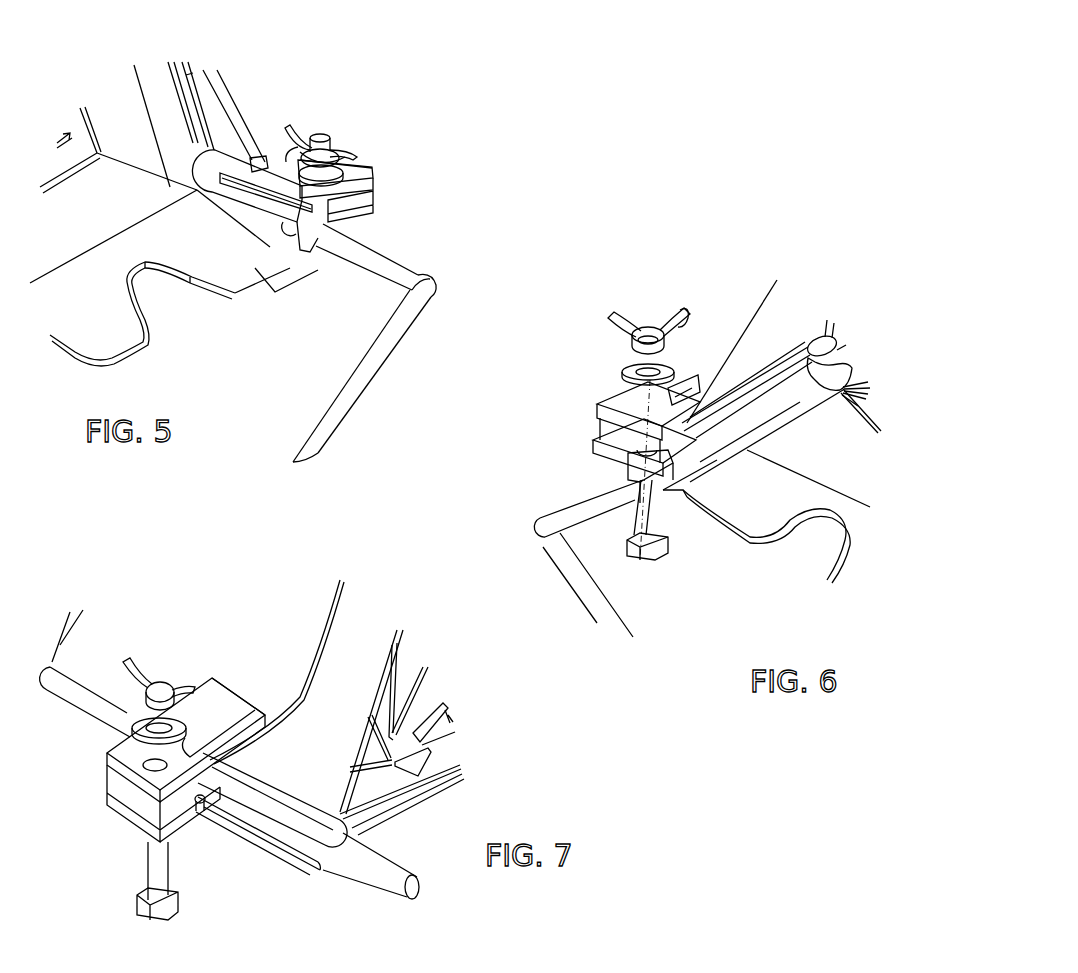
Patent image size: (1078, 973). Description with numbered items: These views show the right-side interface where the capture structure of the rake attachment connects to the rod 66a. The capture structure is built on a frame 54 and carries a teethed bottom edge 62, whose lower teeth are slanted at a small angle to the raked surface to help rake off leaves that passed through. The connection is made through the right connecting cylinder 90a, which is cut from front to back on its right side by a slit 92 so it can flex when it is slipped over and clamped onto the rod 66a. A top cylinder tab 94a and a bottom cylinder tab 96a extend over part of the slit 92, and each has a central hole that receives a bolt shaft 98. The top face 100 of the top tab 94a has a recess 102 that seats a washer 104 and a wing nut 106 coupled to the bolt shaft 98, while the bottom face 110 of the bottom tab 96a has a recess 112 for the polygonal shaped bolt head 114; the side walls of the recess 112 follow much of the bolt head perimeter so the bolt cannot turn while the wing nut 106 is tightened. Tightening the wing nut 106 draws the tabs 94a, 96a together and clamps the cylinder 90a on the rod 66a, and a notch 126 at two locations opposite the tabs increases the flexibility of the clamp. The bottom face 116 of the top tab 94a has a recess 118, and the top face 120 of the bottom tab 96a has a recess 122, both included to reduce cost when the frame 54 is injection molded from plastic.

In FIG. 5, the frame 54 is at (137, 110).
In FIG. 6, the frame 54 is at (772, 393).
In FIG. 7, the frame 54 is at (337, 707).
In FIG. 5, the teethed bottom edge 62 is at (143, 342).
In FIG. 5, the rod 66a is at (390, 352).
In FIG. 6, the rod 66a is at (588, 513).
In FIG. 7, the rod 66a is at (68, 652).
In FIG. 5, the right connecting cylinder 90a is at (302, 250).
In FIG. 6, the right connecting cylinder 90a is at (762, 414).
In FIG. 7, the right connecting cylinder 90a is at (272, 800).
In FIG. 6, the slit 92 is at (763, 373).
In FIG. 7, the slit 92 is at (290, 840).
In FIG. 5, the top cylinder tab 94a is at (373, 170).
In FIG. 6, the top cylinder tab 94a is at (612, 400).
In FIG. 7, the top cylinder tab 94a is at (137, 790).
In FIG. 5, the bottom cylinder tab 96a is at (373, 203).
In FIG. 6, the bottom cylinder tab 96a is at (613, 450).
In FIG. 7, the bottom cylinder tab 96a is at (140, 818).
In FIG. 5, the bolt shaft 98 is at (330, 130).
In FIG. 6, the bolt shaft 98 is at (652, 512).
In FIG. 7, the bolt shaft 98 is at (163, 867).
In FIG. 5, the top face 100 is at (297, 167).
In FIG. 7, the top face 100 is at (210, 760).
In FIG. 5, the recess 102 is at (360, 184).
In FIG. 7, the recess 102 is at (153, 757).
In FIG. 5, the washer 104 is at (343, 183).
In FIG. 6, the washer 104 is at (628, 375).
In FIG. 7, the washer 104 is at (190, 723).
In FIG. 5, the wing nut 106 is at (295, 124).
In FIG. 6, the wing nut 106 is at (618, 332).
In FIG. 7, the wing nut 106 is at (177, 707).
In FIG. 6, the bottom face 110 is at (615, 455).
In FIG. 6, the recess 112 is at (637, 457).
In FIG. 6, the polygonal shaped bolt head 114 is at (643, 563).
In FIG. 6, the bottom face 116 is at (613, 423).
In FIG. 6, the recess 118 is at (673, 400).
In FIG. 7, the top face 120 is at (110, 788).
In FIG. 7, the recess 122 is at (200, 812).
In FIG. 5, the notch 126 is at (288, 228).